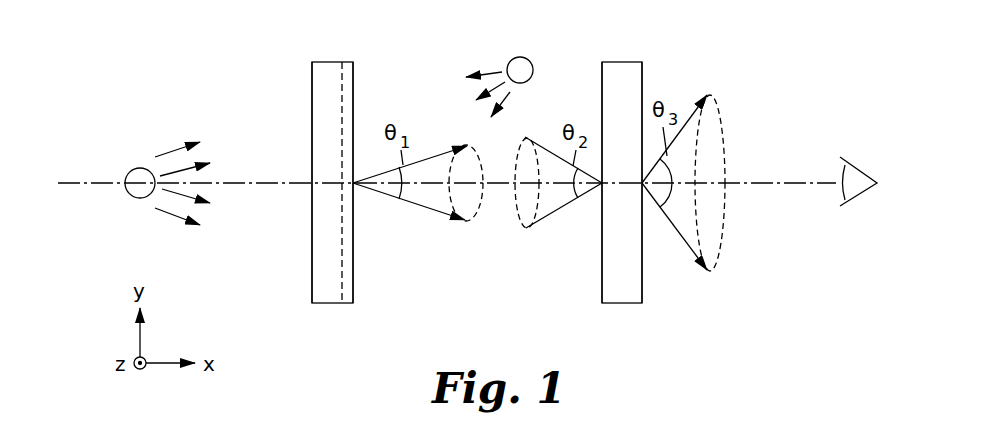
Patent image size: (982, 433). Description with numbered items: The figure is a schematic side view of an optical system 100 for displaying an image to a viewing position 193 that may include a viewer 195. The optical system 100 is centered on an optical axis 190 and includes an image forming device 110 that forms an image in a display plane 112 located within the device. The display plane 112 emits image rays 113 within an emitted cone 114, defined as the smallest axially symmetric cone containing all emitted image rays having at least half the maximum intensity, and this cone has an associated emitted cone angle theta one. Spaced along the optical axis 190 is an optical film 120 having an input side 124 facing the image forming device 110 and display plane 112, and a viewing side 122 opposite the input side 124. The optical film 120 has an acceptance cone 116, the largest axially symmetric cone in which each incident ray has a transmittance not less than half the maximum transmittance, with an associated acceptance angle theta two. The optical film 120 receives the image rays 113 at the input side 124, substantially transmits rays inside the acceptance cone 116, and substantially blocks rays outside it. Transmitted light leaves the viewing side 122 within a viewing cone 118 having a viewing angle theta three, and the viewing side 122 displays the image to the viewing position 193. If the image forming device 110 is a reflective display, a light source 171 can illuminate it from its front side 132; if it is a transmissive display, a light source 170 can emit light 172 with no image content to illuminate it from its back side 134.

The optical system 100 is at (196, 46).
The image forming device 110 is at (327, 70).
The display plane 112 is at (343, 286).
The image rays 113 is at (437, 212).
The emitted cone 114 is at (432, 152).
The acceptance cone 116 is at (542, 218).
The viewing cone 118 is at (686, 243).
The optical film 120 is at (615, 70).
The viewing side 122 is at (642, 88).
The input side 124 is at (602, 84).
The front side 132 is at (353, 286).
The back side 134 is at (312, 262).
The light source 170 is at (137, 172).
The light source 171 is at (520, 57).
The light 172 is at (168, 216).
The optical axis 190 is at (70, 185).
The viewing position 193 is at (790, 82).
The viewer 195 is at (855, 176).